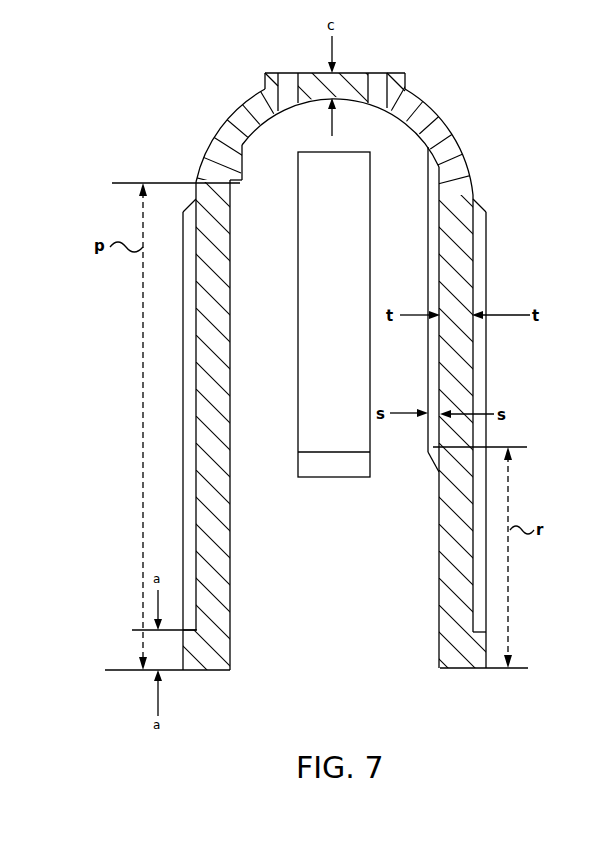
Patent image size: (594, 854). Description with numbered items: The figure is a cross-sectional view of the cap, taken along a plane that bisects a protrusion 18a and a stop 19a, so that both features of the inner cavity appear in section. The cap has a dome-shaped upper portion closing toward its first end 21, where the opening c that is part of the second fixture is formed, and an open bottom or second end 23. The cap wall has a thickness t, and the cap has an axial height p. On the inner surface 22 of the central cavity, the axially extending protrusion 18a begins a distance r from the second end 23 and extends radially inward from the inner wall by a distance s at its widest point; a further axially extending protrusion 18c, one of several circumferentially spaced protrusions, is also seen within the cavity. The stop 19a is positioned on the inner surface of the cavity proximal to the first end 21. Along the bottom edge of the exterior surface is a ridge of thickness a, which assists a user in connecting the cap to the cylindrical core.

The first end 21 is at (257, 80).
The stop 19a is at (237, 170).
The axially extending protrusion 18a is at (446, 202).
The axially extending protrusion 18c is at (322, 286).
The inner surface 22 is at (247, 552).
The second end 23 is at (205, 660).